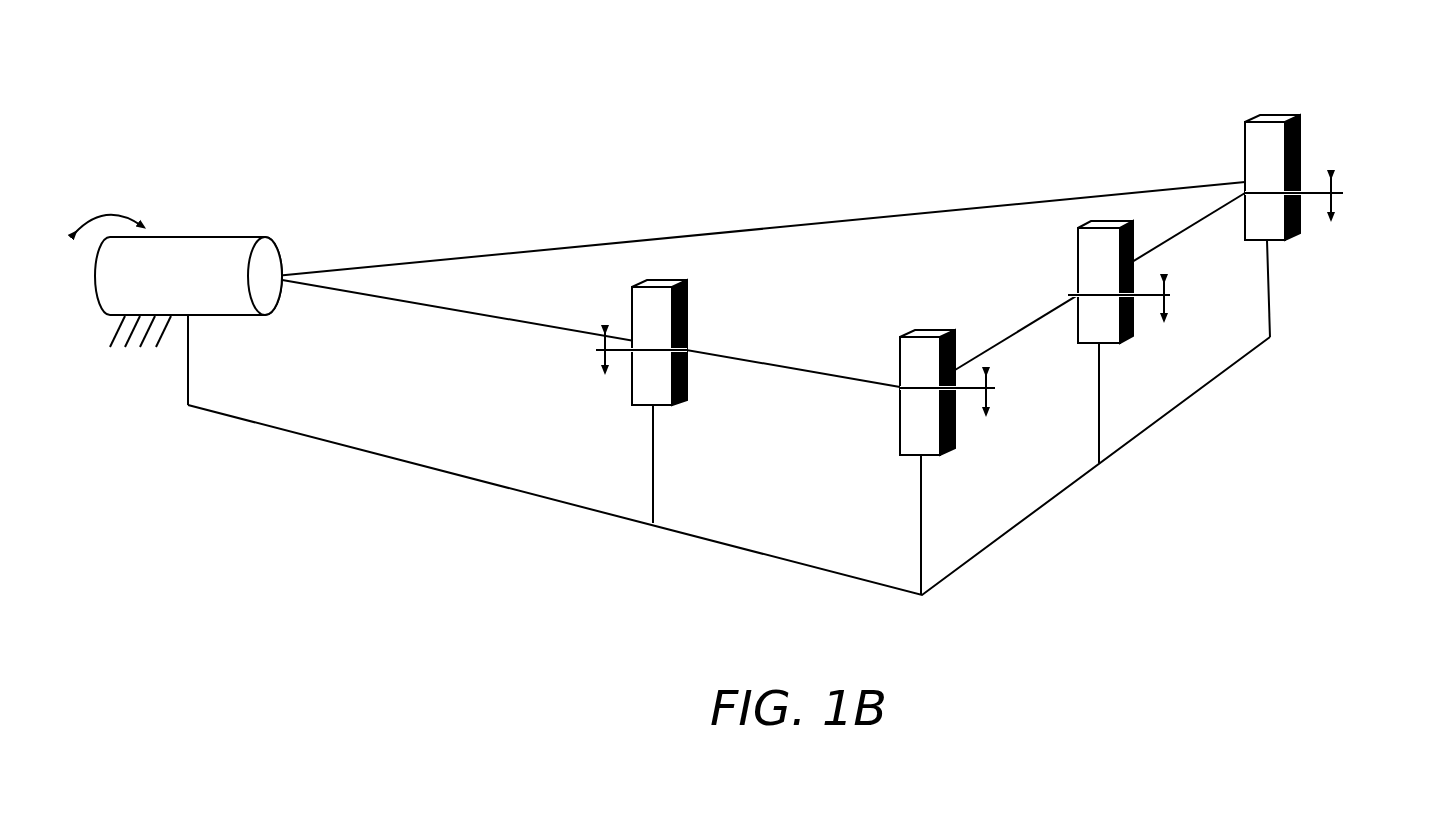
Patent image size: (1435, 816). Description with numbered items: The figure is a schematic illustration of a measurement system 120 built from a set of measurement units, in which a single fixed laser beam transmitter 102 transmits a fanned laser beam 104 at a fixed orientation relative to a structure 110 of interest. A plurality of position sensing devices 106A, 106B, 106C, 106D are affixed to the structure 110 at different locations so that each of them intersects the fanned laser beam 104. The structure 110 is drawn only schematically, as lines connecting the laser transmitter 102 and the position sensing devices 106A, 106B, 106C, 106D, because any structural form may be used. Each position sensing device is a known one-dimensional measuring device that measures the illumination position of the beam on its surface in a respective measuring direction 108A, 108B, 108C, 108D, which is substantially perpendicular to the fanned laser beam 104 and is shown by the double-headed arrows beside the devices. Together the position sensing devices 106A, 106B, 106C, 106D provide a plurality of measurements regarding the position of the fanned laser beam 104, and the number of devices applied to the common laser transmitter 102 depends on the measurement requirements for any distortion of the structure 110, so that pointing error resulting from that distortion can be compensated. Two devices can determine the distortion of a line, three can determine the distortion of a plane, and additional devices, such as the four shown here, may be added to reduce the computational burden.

The laser beam transmitter 102 is at (193, 237).
The fanned laser beam 104 is at (752, 245).
The position sensing device 106A is at (1102, 221).
The position sensing device 106B is at (910, 455).
The position sensing device 106C is at (1275, 115).
The position sensing device 106D is at (645, 405).
The measuring direction 108A is at (1156, 298).
The measuring direction 108B is at (985, 392).
The measuring direction 108C is at (1330, 196).
The measuring direction 108D is at (607, 350).
The structure 110 is at (1045, 506).
The system 120 is at (1182, 45).